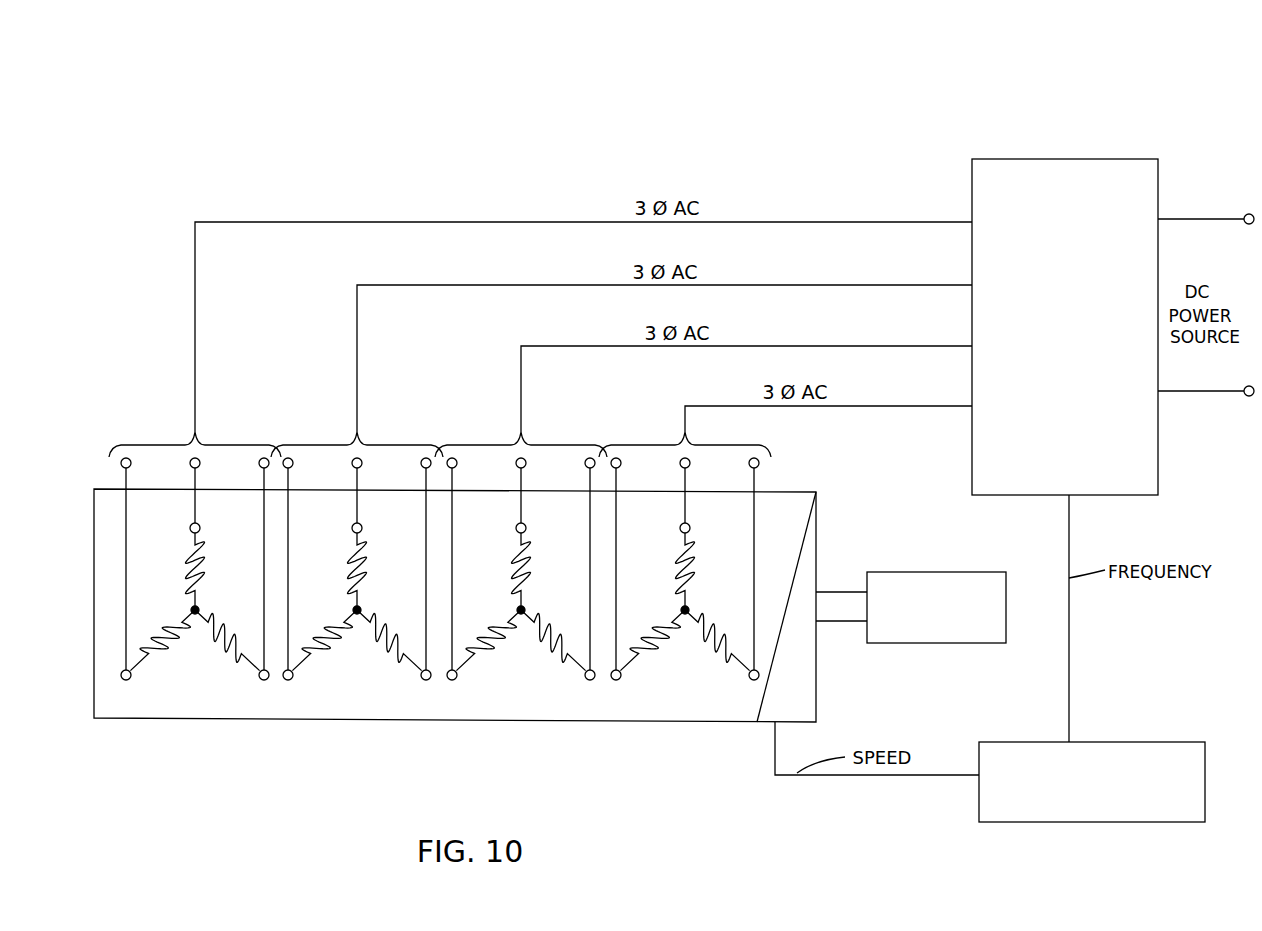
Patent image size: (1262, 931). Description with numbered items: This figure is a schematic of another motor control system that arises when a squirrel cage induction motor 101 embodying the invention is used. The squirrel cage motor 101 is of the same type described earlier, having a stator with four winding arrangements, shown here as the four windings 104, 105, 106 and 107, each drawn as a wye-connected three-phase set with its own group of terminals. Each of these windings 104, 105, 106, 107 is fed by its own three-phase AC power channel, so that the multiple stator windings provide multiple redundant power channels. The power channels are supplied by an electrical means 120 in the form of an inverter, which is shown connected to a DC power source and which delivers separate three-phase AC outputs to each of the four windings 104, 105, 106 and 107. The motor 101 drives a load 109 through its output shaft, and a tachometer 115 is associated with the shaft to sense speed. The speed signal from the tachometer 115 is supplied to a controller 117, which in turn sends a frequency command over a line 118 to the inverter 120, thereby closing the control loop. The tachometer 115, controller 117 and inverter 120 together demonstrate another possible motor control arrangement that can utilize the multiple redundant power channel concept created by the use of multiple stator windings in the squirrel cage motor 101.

The squirrel cage induction motor 101 is at (440, 722).
The winding 104 is at (190, 659).
The winding 105 is at (348, 670).
The winding 106 is at (511, 680).
The winding 107 is at (670, 675).
The load 109 is at (953, 643).
The tachometer 115 is at (816, 677).
The controller 117 is at (1062, 822).
The frequency control line 118 is at (1069, 663).
The electrical means 120 is at (1042, 172).